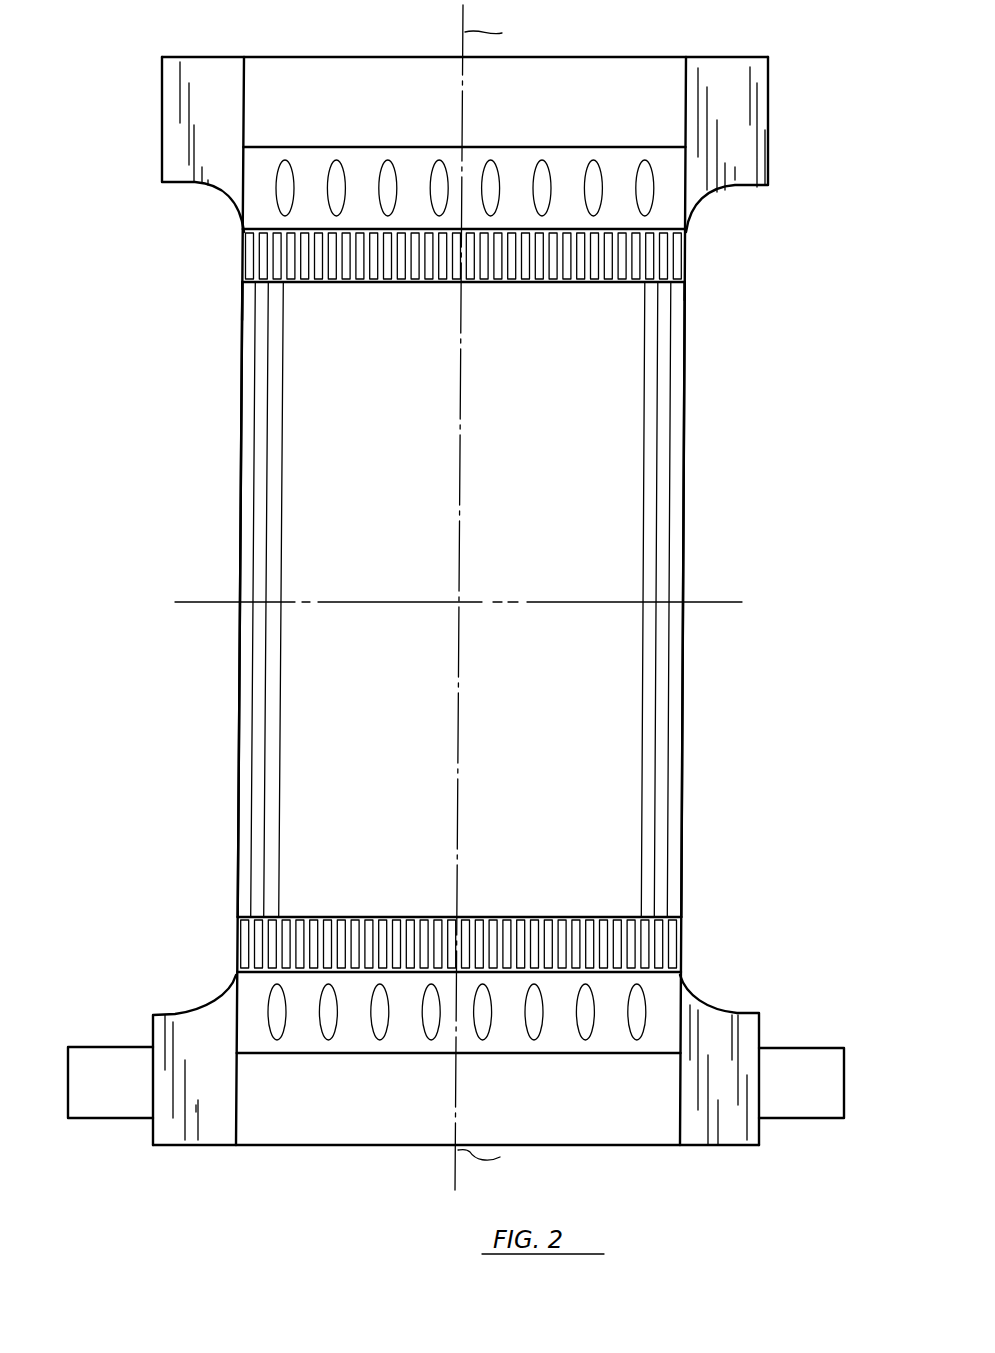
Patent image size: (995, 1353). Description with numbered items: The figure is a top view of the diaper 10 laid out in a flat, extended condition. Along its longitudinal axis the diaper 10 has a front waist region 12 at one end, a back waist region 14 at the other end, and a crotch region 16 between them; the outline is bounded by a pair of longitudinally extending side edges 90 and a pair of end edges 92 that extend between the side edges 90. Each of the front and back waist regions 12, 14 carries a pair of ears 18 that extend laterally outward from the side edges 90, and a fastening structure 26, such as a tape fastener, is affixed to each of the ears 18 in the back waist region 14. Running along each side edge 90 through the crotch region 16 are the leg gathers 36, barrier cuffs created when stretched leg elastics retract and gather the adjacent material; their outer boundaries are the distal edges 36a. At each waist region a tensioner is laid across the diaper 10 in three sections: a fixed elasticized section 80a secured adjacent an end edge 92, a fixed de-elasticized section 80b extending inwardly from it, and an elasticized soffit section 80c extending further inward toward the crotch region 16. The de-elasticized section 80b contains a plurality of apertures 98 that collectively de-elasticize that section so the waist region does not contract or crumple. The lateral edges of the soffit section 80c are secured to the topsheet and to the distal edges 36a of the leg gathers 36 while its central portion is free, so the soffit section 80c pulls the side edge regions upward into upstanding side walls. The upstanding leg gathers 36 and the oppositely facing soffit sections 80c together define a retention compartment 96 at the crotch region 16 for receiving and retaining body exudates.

The diaper 10 is at (711, 34).
The front waist region 12 is at (470, 161).
The back waist region 14 is at (298, 1150).
The crotch region 16 is at (460, 597).
The ears 18 is at (224, 104).
The fastening structure 26 is at (105, 1063).
The leg gathers 36 is at (661, 330).
The distal edges of the leg gathers 36a is at (238, 402).
The fixed elasticized section 80a is at (388, 100).
The fixed de-elasticized section 80b is at (465, 146).
The elasticized soffit section 80c is at (268, 224).
The side edges 90 is at (238, 313).
The end edges 92 is at (612, 56).
The retention compartment 96 is at (520, 580).
The apertures 98 is at (436, 177).